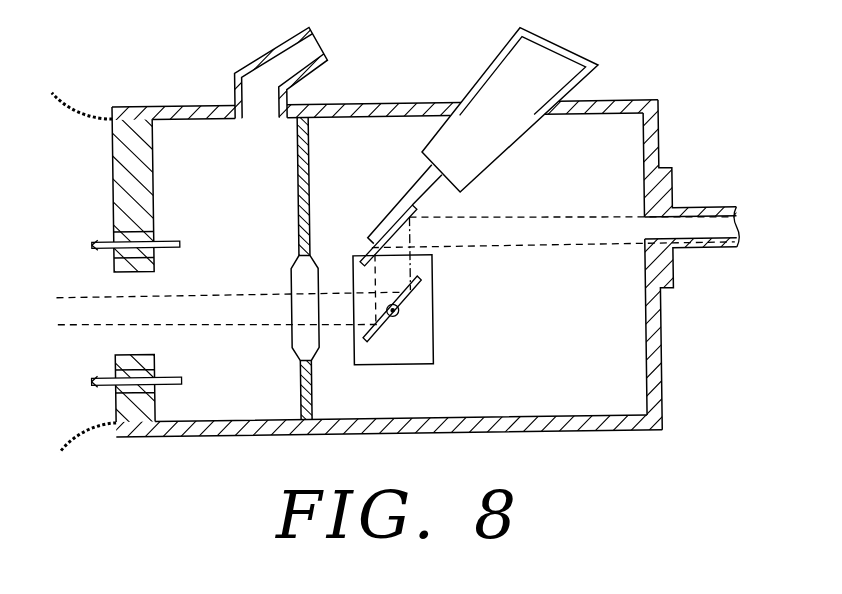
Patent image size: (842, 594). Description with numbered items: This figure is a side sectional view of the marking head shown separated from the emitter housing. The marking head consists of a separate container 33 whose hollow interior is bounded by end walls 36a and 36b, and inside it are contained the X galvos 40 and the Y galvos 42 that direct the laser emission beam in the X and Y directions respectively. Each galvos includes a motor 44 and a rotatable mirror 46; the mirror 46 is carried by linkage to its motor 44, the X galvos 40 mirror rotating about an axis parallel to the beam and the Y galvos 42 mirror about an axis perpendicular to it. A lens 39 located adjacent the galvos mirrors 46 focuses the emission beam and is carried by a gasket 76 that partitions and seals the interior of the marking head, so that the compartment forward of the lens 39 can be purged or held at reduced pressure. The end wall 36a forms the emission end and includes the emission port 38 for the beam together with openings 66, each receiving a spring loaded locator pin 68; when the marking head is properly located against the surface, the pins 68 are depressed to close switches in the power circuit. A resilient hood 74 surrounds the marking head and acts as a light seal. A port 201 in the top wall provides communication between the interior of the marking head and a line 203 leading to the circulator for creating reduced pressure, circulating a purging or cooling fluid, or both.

The separate container 33 is at (212, 106).
The end wall 36a is at (155, 173).
The end wall 36b is at (658, 127).
The port 38 is at (117, 355).
The lens 39 is at (288, 345).
The X galvos 40 is at (545, 99).
The Y galvos 42 is at (422, 358).
The motor 44 is at (480, 172).
The rotatable mirror 46 is at (366, 253).
The opening 66 is at (108, 253).
The locator pin 68 is at (100, 240).
The resilient hood 74 is at (76, 428).
The gasket 76 is at (308, 178).
The port 201 is at (247, 110).
The line 203 is at (291, 44).